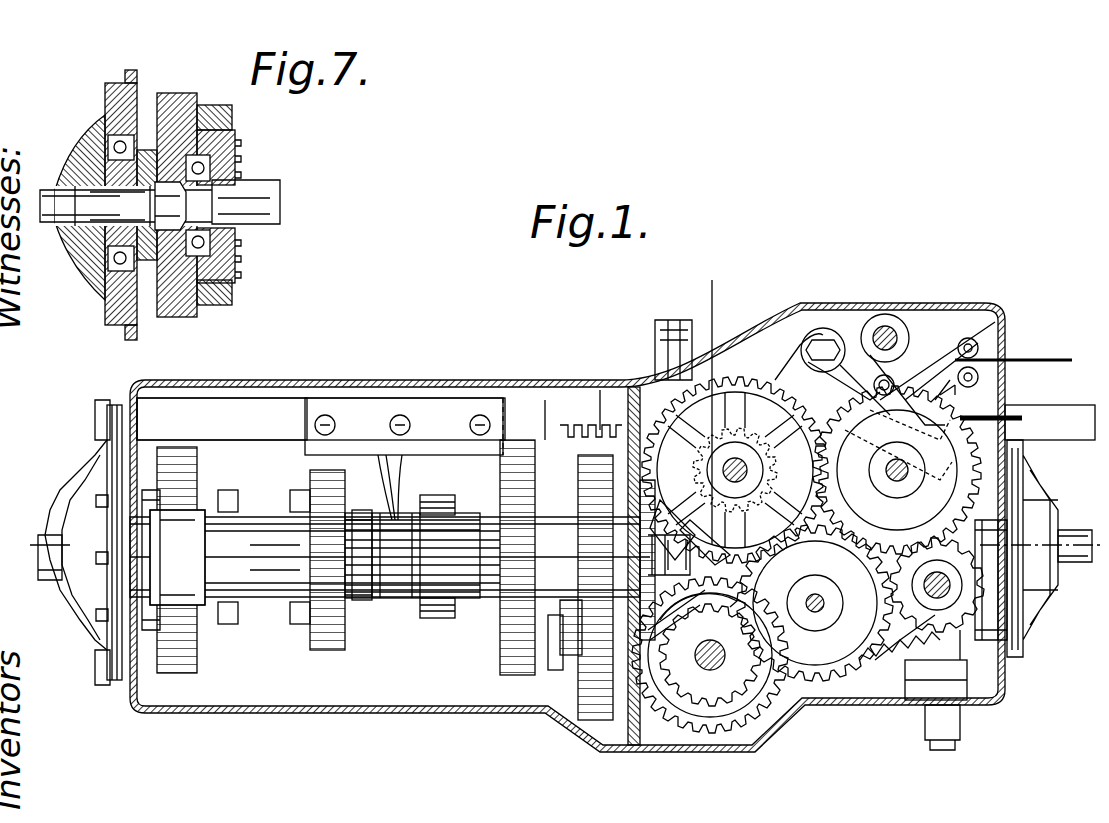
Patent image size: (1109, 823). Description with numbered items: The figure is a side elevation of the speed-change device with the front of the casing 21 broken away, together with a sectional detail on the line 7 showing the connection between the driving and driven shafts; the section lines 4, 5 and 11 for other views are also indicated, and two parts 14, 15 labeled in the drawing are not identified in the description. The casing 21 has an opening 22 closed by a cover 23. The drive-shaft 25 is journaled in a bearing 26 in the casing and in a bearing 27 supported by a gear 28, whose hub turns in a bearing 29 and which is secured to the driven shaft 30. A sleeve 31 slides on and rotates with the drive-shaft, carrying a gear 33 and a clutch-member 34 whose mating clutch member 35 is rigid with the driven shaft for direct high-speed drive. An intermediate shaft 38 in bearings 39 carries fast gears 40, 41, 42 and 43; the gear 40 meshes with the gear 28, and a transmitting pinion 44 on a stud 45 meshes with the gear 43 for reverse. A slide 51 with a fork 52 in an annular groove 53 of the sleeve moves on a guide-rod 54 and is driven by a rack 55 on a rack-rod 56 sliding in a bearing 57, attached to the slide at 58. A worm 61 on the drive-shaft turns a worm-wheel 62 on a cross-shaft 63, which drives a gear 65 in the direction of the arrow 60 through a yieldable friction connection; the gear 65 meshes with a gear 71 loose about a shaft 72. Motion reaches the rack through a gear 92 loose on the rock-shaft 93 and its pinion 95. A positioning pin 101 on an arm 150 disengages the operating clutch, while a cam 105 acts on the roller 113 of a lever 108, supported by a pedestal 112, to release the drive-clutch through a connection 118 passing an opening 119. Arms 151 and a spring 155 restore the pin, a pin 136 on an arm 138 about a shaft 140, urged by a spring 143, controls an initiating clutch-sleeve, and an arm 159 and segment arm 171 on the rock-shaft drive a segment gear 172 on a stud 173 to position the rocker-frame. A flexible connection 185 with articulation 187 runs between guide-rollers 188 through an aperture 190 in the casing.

In FIG. 1, the section line 4- 4 is at (711, 304).
In FIG. 1, the section line 5- 5 is at (1104, 564).
In FIG. 1, the section line 7- 7 is at (257, 535).
In FIG. 1, the section line 11- 11 is at (620, 355).
In FIG. 1, the gear 14 is at (860, 520).
In FIG. 1, the shaft 15 is at (908, 478).
In FIG. 7, the casing 21 is at (137, 330).
In FIG. 1, the casing 21 is at (268, 713).
In FIG. 1, the opening 22 is at (225, 430).
In FIG. 1, the cover 23 is at (795, 330).
In FIG. 7, the drive-shaft 25 is at (280, 220).
In FIG. 1, the drive-shaft 25 is at (1080, 575).
In FIG. 1, the bearing 26 is at (1060, 590).
In FIG. 7, the bearing 27 is at (232, 238).
In FIG. 7, the gear 28 is at (235, 300).
In FIG. 1, the gear 28 is at (175, 475).
In FIG. 7, the bearing 29 is at (210, 308).
In FIG. 1, the bearing 29 is at (80, 525).
In FIG. 7, the driven shaft 30 is at (60, 225).
In FIG. 1, the driven shaft 30 is at (50, 580).
In FIG. 1, the sleeve 31 is at (355, 600).
In FIG. 1, the gear 33 is at (440, 497).
In FIG. 1, the clutch-member 34 is at (298, 492).
In FIG. 7, the clutch member 35 is at (238, 168).
In FIG. 1, the clutch member 35 is at (225, 492).
In FIG. 1, the intermediate shaft 38 is at (405, 600).
In FIG. 1, the bearings 39 is at (645, 650).
In FIG. 1, the gear 40 is at (178, 600).
In FIG. 1, the gear 41 is at (330, 650).
In FIG. 1, the gear 42 is at (510, 610).
In FIG. 1, the gear 43 is at (585, 600).
In FIG. 1, the transmitting pinion 44 is at (570, 660).
In FIG. 1, the stud 45 is at (560, 680).
In FIG. 1, the slide 51 is at (340, 398).
In FIG. 1, the fork 52 is at (385, 492).
In FIG. 1, the annular groove 53 is at (362, 600).
In FIG. 1, the guide-rod 54 is at (248, 425).
In FIG. 1, the rack 55 is at (580, 395).
In FIG. 1, the rack-rod 56 is at (545, 380).
In FIG. 1, the bearing 57 is at (1000, 395).
In FIG. 1, the attachment 58 is at (400, 425).
In FIG. 1, the arrow 60 is at (690, 580).
In FIG. 1, the worm 61 is at (700, 530).
In FIG. 1, the worm-wheel 62 is at (770, 720).
In FIG. 1, the cross-shaft 63 is at (722, 700).
In FIG. 1, the gear 65 is at (705, 672).
In FIG. 1, the gear 71 is at (812, 615).
In FIG. 1, the shaft 72 is at (806, 604).
In FIG. 1, the gear 92 is at (660, 375).
In FIG. 1, the rock-shaft 93 is at (768, 448).
In FIG. 1, the pinion 95 is at (765, 490).
In FIG. 1, the positioning pin 101 is at (885, 680).
In FIG. 1, the cam 105 is at (1040, 620).
In FIG. 1, the lever 108 is at (1025, 520).
In FIG. 1, the pedestal 112 is at (965, 680).
In FIG. 1, the roller 113 is at (962, 715).
In FIG. 1, the connection 118 is at (1020, 418).
In FIG. 1, the opening 119 is at (1040, 440).
In FIG. 1, the pin 136 is at (1050, 422).
In FIG. 1, the arm 138 is at (990, 330).
In FIG. 1, the shaft 140 is at (885, 335).
In FIG. 1, the spring 143 is at (770, 390).
In FIG. 1, the arm 150 is at (910, 612).
In FIG. 1, the arm 151 is at (848, 495).
In FIG. 1, the spring 155 is at (900, 700).
In FIG. 1, the arm 159 is at (762, 468).
In FIG. 1, the segment arm 171 is at (770, 400).
In FIG. 1, the segment gear 172 is at (828, 348).
In FIG. 1, the stud 173 is at (870, 392).
In FIG. 1, the connection 185 is at (1045, 358).
In FIG. 1, the articulation 187 is at (953, 390).
In FIG. 1, the guide-roller 188 is at (975, 345).
In FIG. 1, the aperture 190 is at (975, 372).